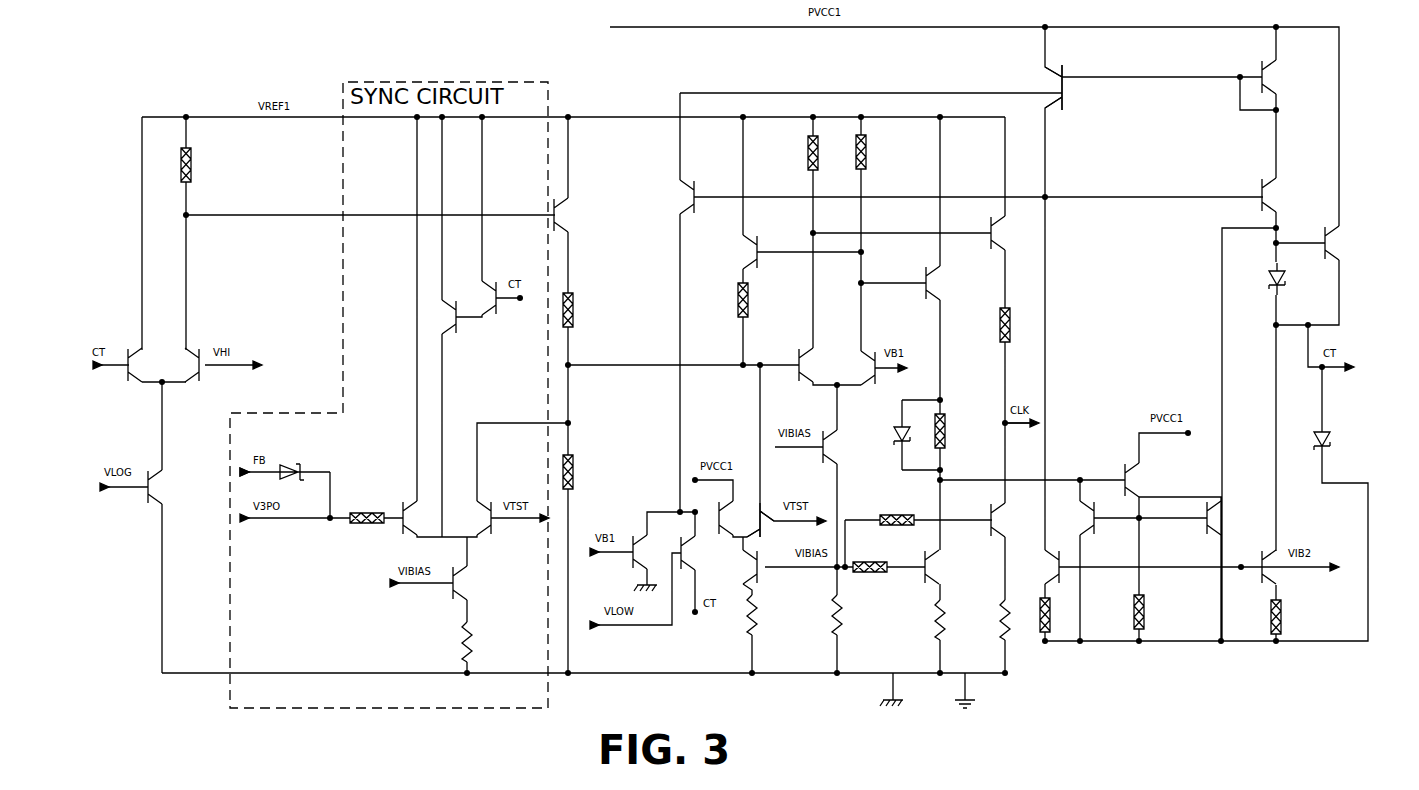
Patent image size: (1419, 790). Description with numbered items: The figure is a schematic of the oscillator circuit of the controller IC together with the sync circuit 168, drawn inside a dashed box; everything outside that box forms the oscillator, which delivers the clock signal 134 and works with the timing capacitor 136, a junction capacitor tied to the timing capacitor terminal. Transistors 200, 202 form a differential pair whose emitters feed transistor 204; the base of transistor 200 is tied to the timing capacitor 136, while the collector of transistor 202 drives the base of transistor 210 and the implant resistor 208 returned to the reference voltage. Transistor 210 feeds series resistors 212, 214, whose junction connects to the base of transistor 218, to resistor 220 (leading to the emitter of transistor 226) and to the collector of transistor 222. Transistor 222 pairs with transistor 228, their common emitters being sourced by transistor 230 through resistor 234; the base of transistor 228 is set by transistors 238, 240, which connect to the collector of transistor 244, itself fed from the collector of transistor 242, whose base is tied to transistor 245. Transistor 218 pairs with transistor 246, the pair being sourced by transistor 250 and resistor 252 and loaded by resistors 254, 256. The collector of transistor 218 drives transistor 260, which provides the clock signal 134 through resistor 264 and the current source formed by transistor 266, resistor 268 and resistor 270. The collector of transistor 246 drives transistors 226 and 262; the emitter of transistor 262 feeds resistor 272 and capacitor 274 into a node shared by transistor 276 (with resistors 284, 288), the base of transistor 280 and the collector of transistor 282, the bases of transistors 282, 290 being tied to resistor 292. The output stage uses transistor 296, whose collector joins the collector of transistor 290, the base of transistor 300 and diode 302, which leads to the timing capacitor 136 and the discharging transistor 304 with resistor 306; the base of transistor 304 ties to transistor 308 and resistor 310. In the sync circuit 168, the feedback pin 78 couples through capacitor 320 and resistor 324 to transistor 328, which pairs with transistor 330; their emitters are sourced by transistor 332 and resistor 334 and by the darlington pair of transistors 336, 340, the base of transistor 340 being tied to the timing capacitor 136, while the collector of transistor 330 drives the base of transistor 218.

The sync circuit 168 is at (478, 78).
The resistor 208 is at (191, 183).
The transistor 200 is at (135, 382).
The transistor 202 is at (190, 382).
The transistor 204 is at (160, 488).
The feedback pin 78 is at (240, 470).
The capacitor 320 is at (292, 464).
The resistor 324 is at (384, 488).
The transistor 328 is at (410, 505).
The transistor 330 is at (478, 505).
The transistor 332 is at (470, 583).
The resistor 334 is at (472, 640).
The transistor 336 is at (452, 318).
The transistor 340 is at (485, 300).
The transistor 210 is at (563, 218).
The resistor 212 is at (573, 310).
The resistor 214 is at (573, 470).
The transistor 244 is at (686, 194).
The transistor 226 is at (752, 254).
The resistor 220 is at (748, 308).
The transistor 218 is at (805, 350).
The transistor 228 is at (733, 530).
The transistor 222 is at (765, 500).
The transistor 240 is at (645, 540).
The transistor 238 is at (692, 553).
The transistor 230 is at (748, 578).
The resistor 234 is at (755, 625).
The transistor 246 is at (868, 360).
The resistor 254 is at (808, 160).
The resistor 256 is at (866, 152).
The capacitor 274 is at (900, 428).
The transistor 250 is at (835, 455).
The resistor 270 is at (900, 514).
The resistor 288 is at (870, 562).
The resistor 252 is at (842, 620).
The transistor 276 is at (932, 570).
The resistor 284 is at (945, 618).
The resistor 268 is at (1000, 630).
The clock signal 134 is at (1000, 440).
The resistor 272 is at (945, 428).
The resistor 264 is at (1000, 322).
The transistor 262 is at (932, 285).
The transistor 260 is at (1000, 236).
The transistor 242 is at (1052, 78).
The transistor 245 is at (1270, 82).
The transistor 296 is at (1270, 200).
The transistor 300 is at (1360, 240).
The diode 302 is at (1270, 283).
The timing capacitor 136 is at (1330, 436).
The transistor 266 is at (1010, 508).
The transistor 282 is at (1085, 523).
The transistor 280 is at (1135, 485).
The transistor 290 is at (1214, 518).
The resistor 292 is at (1144, 612).
The discharging transistor 304 is at (1278, 578).
The resistor 306 is at (1281, 620).
The resistor 310 is at (1050, 615).
The transistor 308 is at (1048, 575).